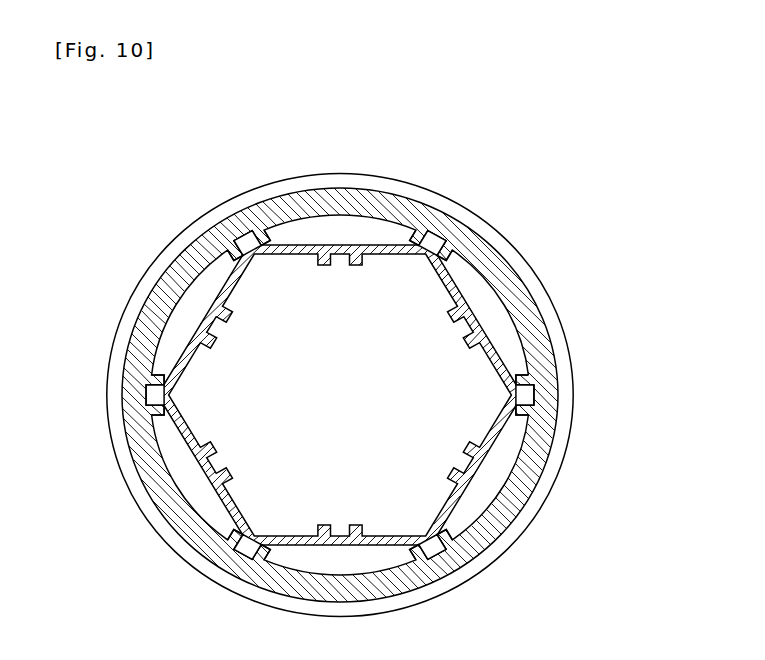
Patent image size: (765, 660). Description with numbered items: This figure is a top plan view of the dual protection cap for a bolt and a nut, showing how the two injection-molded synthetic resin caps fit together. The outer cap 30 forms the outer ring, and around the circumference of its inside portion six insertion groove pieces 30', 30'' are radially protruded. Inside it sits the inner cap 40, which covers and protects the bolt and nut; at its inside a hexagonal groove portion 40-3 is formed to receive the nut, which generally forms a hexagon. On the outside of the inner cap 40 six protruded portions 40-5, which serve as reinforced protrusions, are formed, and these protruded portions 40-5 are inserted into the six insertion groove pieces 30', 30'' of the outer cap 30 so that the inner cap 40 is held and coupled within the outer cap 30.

The outer cap 30 is at (369, 395).
The insertion groove piece 30' is at (381, 374).
The insertion groove piece 30'' is at (395, 371).
The inner cap 40 is at (223, 290).
The hexagonal groove portion 40-3 is at (420, 262).
The protruded portion 40-5 is at (236, 248).